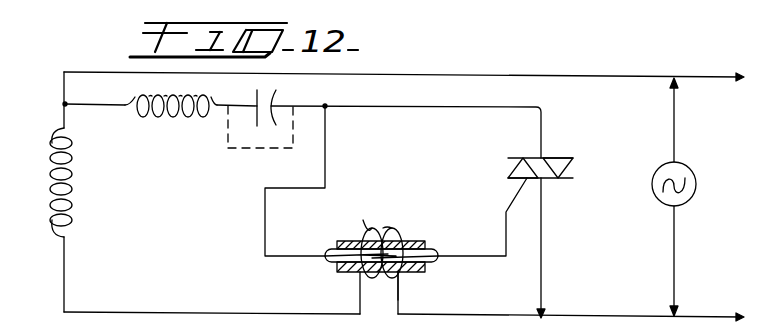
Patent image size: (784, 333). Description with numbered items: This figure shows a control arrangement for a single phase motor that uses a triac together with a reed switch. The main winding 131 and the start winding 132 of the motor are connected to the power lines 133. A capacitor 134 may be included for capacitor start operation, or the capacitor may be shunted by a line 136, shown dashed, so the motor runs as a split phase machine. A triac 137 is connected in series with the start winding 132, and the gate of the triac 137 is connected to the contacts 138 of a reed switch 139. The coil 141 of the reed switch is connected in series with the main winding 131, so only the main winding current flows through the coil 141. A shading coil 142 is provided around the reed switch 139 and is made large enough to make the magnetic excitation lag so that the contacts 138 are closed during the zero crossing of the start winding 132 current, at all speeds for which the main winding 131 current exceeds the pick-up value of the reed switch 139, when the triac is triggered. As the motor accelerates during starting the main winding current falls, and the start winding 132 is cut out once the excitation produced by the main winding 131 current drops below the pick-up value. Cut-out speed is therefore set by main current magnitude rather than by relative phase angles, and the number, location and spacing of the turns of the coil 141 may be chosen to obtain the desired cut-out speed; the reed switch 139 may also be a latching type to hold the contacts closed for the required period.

The main winding 131 is at (52, 187).
The start winding 132 is at (187, 118).
The power lines 133 is at (710, 80).
The capacitor 134 is at (274, 100).
The shunt line 136 is at (236, 148).
The triac 137 is at (558, 152).
The contacts 138 is at (364, 273).
The reed switch 139 is at (391, 245).
The coil 141 is at (370, 228).
The shading coil 142 is at (418, 274).